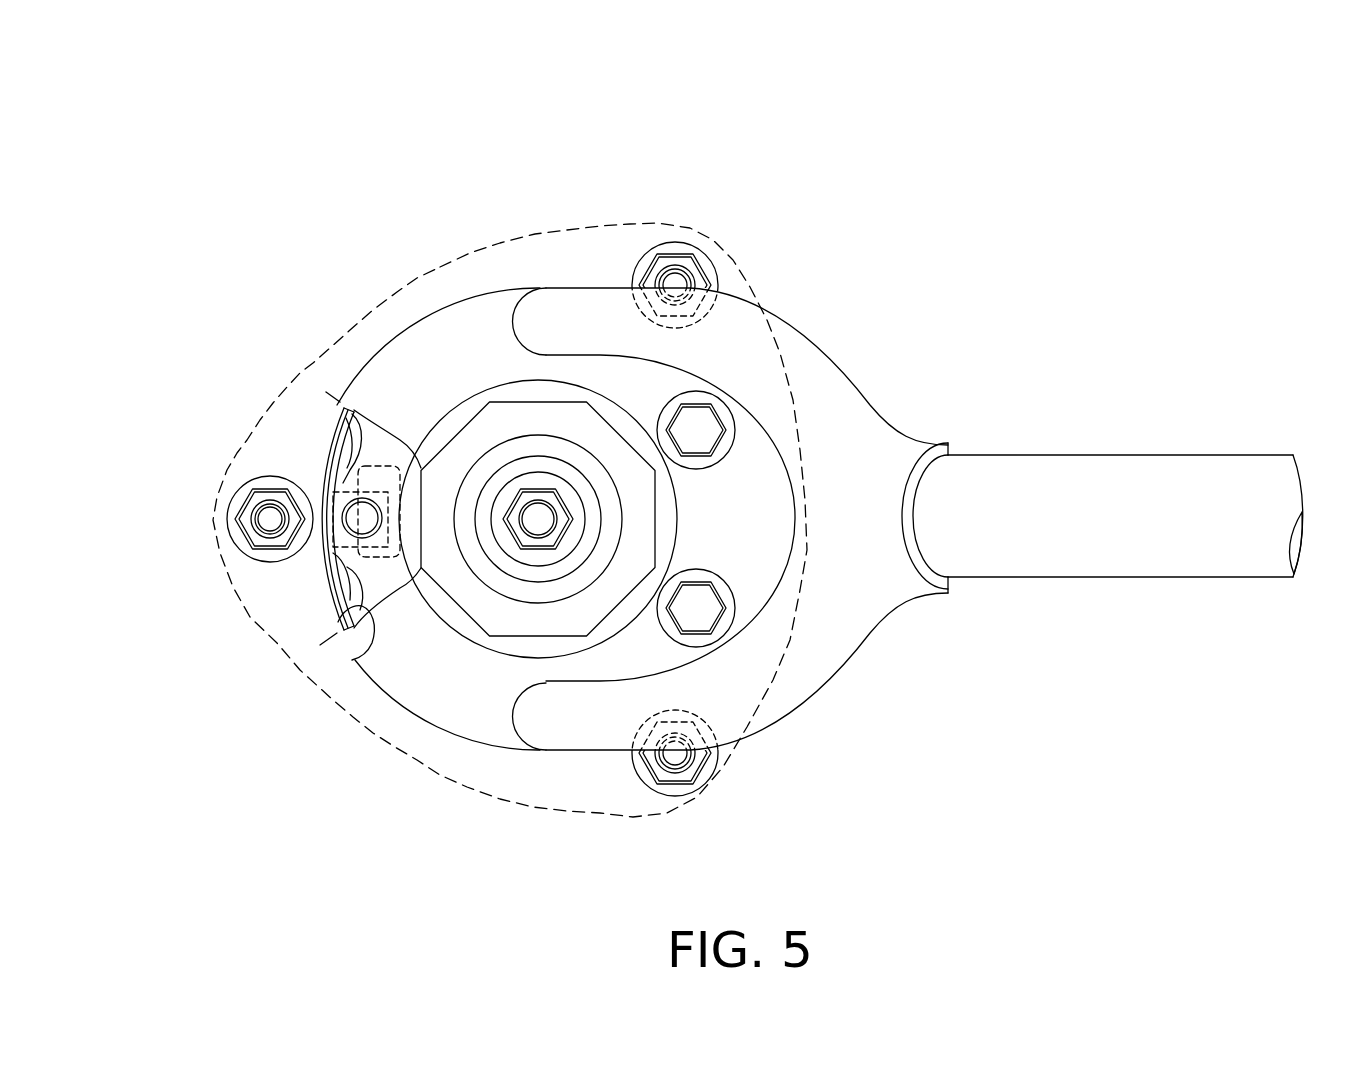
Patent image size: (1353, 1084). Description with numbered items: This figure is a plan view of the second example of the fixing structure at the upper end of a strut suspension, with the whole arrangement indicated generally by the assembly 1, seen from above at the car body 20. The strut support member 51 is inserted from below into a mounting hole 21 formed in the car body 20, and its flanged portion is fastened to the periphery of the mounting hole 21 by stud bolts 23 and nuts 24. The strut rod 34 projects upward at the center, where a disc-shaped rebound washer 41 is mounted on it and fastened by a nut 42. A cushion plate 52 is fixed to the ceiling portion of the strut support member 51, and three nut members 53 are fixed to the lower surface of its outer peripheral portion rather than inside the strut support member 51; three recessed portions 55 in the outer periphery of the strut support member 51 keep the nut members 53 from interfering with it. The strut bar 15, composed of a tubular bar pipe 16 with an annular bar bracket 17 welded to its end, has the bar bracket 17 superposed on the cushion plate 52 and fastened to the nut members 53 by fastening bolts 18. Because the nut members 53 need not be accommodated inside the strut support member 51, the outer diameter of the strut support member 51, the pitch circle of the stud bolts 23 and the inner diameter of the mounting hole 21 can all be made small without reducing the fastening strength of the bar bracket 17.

The assembly 1 is at (805, 198).
The strut bar 15 is at (1068, 336).
The bar pipe 16 is at (1047, 446).
The bar bracket 17 is at (890, 416).
The fastening bolts 18 is at (698, 433).
The car body 20 is at (358, 776).
The mounting hole 21 is at (350, 657).
The stud bolts 23 is at (268, 520).
The nuts 24 is at (234, 538).
The strut rod 34 is at (533, 516).
The rebound washer 41 is at (510, 416).
The nut 42 is at (571, 491).
The strut support member 51 is at (341, 421).
The cushion plate 52 is at (335, 468).
The nut members 53 is at (318, 484).
The recessed portions 55 is at (328, 574).